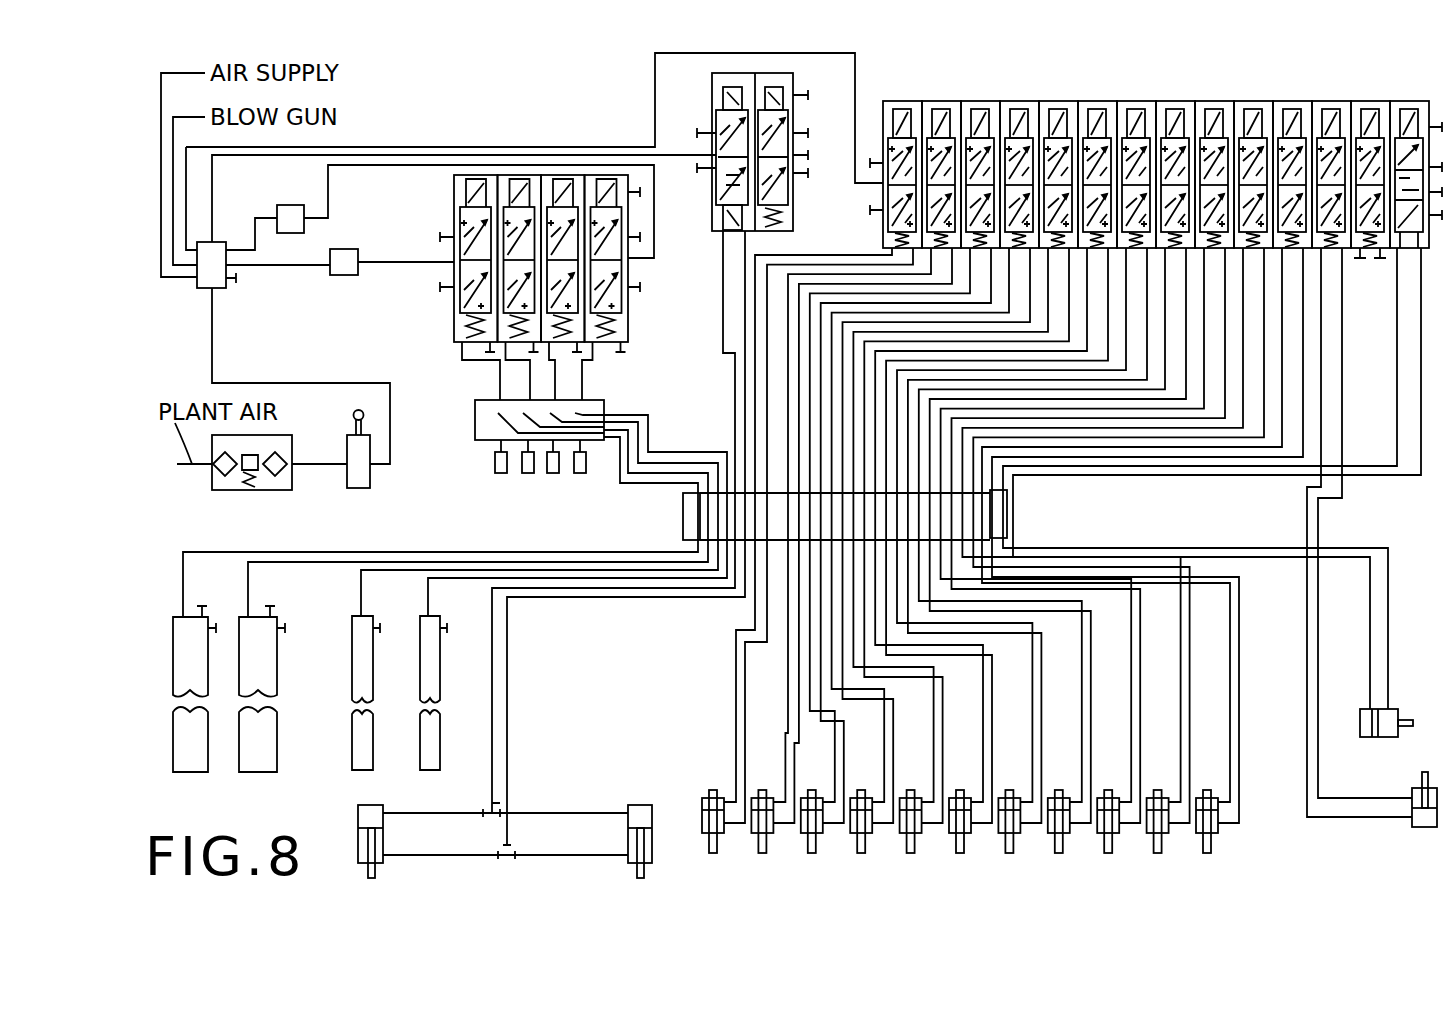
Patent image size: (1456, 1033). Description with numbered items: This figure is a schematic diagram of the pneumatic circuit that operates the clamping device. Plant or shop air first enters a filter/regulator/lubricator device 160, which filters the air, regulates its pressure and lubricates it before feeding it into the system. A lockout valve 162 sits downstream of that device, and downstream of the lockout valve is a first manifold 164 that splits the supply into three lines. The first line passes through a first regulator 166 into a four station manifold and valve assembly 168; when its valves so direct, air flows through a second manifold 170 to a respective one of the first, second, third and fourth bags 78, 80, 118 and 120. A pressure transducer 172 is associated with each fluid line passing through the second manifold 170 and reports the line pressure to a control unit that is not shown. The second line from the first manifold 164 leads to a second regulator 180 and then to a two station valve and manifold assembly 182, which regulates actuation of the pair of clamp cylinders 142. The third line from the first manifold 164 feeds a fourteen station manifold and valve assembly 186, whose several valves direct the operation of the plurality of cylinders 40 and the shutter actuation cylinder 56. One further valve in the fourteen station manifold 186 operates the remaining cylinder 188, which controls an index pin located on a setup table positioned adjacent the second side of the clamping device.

The cylinders 40 is at (860, 832).
The shutter actuation cylinder 56 is at (1393, 717).
The first bag 78 is at (360, 733).
The second bag 80 is at (183, 758).
The third bag 118 is at (433, 737).
The fourth bag 120 is at (248, 760).
The clamp cylinders 142 is at (383, 840).
The filter/regulator/lubricator device 160 is at (237, 490).
The lockout valve 162 is at (352, 485).
The first manifold 164 is at (208, 278).
The first regulator 166 is at (350, 267).
The four station manifold and valve assembly 168 is at (630, 317).
The second manifold 170 is at (483, 413).
The pressure transducer 172 is at (503, 468).
The second regulator 180 is at (292, 212).
The two station valve and manifold assembly 182 is at (797, 211).
The fourteen station manifold and valve assembly 186 is at (1187, 98).
The remaining cylinder 188 is at (1438, 787).